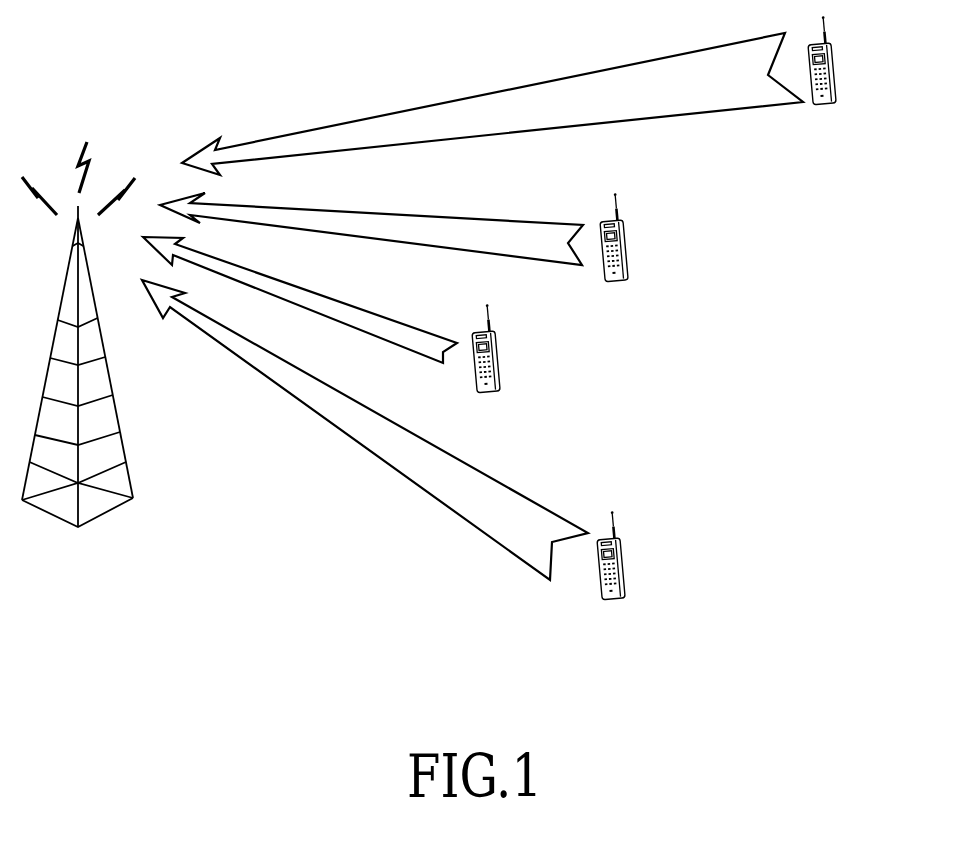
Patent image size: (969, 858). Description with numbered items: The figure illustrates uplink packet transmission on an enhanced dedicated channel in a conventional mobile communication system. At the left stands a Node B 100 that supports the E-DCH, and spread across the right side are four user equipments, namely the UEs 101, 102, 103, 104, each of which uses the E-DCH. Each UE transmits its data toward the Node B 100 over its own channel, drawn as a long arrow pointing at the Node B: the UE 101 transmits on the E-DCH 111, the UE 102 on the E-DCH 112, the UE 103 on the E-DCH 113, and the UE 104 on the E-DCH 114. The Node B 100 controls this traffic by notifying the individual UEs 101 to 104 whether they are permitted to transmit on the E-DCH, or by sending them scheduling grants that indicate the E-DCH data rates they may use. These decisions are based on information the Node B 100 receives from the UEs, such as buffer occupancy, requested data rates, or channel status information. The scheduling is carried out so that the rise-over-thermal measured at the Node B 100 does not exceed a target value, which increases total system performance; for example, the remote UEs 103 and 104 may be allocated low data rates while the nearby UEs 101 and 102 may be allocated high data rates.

The Node B 100 is at (110, 375).
The UE 101 is at (498, 367).
The UE 102 is at (628, 252).
The UE 103 is at (622, 573).
The UE 104 is at (833, 80).
The E-DCH 111 is at (340, 300).
The E-DCH 112 is at (398, 213).
The E-DCH 113 is at (383, 413).
The E-DCH 114 is at (503, 88).